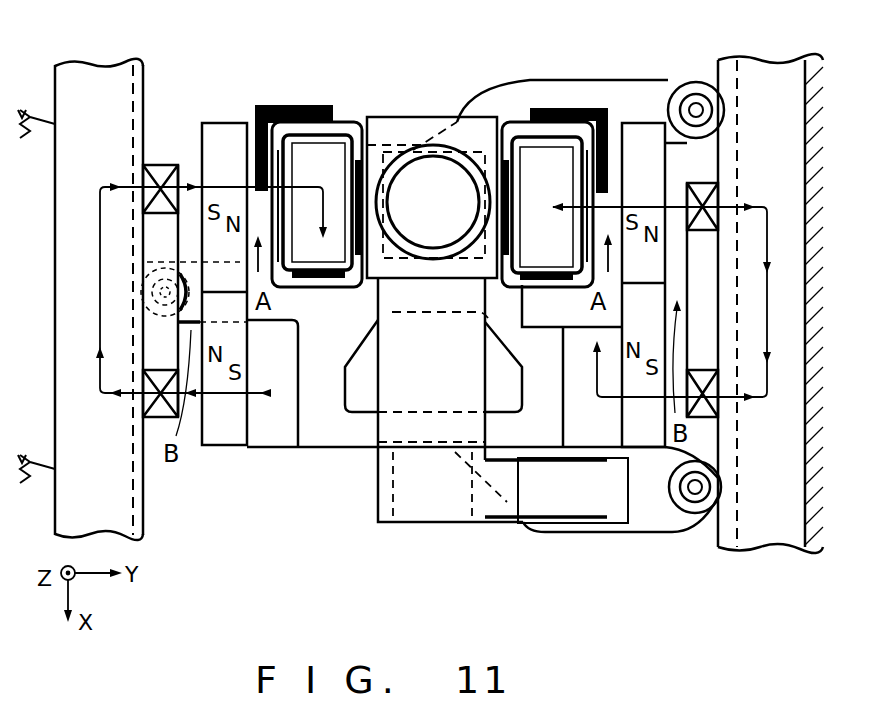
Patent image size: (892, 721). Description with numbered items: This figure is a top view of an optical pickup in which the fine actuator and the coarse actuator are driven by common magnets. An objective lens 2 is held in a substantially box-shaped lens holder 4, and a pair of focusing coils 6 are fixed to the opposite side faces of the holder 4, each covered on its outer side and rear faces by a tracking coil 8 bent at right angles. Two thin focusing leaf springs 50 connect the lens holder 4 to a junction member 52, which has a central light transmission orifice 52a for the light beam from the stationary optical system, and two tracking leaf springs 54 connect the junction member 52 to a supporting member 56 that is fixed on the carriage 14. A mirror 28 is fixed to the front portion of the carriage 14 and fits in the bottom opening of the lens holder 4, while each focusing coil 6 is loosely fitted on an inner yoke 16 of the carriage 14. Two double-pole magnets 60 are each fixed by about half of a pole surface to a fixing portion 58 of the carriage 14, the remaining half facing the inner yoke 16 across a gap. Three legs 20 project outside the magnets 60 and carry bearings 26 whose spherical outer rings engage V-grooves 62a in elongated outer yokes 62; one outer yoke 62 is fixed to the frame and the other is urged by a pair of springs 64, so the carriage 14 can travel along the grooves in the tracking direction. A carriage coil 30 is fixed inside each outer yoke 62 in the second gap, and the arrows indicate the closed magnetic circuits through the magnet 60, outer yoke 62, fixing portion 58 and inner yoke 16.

The objective lens 2 is at (433, 165).
The lens holder 4 is at (405, 122).
The focusing coil 6 is at (360, 124).
The tracking coil 8 is at (275, 108).
The carriage 14 is at (331, 448).
The inner yoke 16 is at (317, 135).
The leg 20 is at (191, 262).
The bearing 26 is at (700, 92).
The mirror 28 is at (483, 150).
The carriage coil 30 is at (152, 165).
The focusing leaf spring 50 is at (378, 452).
The junction member 52 is at (460, 510).
The light transmission orifice 52a is at (404, 522).
The tracking leaf spring 54 is at (506, 503).
The supporting member 56 is at (621, 517).
The fixing portion 58 is at (272, 448).
The double-pole magnet 60 is at (223, 126).
The outer yoke 62 is at (105, 152).
The V-groove 62a is at (133, 447).
The spring 64 is at (36, 140).